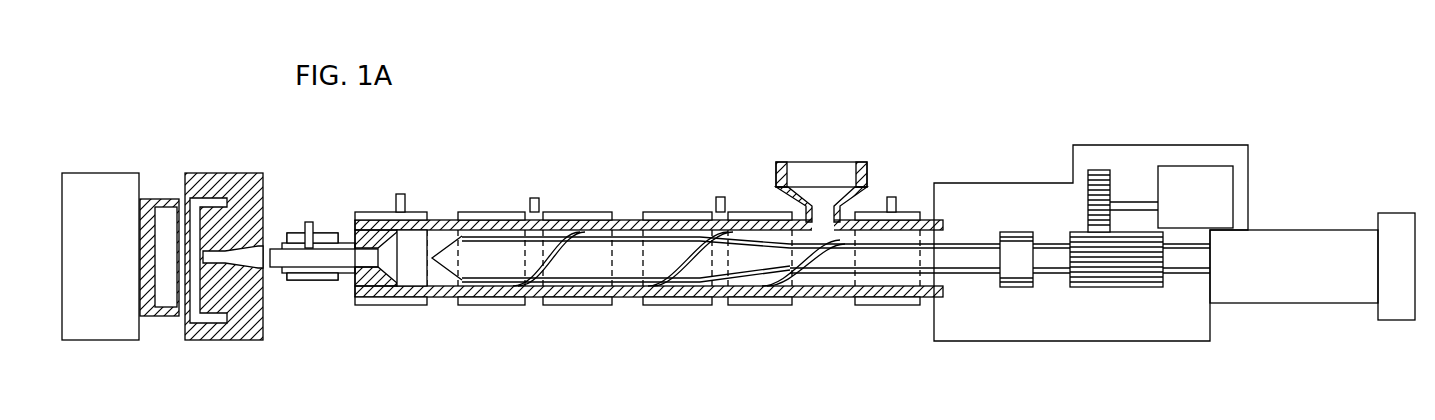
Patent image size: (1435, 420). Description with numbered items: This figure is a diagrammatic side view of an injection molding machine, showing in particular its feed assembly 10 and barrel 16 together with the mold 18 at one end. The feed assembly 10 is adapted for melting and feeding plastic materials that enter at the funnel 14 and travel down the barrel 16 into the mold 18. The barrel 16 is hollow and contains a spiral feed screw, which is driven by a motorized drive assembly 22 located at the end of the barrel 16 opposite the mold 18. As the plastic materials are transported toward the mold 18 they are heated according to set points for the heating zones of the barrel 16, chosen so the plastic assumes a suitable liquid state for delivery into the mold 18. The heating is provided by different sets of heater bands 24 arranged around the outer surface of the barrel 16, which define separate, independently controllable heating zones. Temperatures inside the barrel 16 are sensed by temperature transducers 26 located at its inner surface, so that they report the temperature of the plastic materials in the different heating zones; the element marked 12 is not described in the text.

The feed assembly 10 is at (583, 116).
The barrel 12 is at (914, 212).
The funnel 14 is at (778, 162).
The barrel 16 is at (626, 213).
The mold 18 is at (161, 170).
The motorized drive assembly 22 is at (1115, 145).
The heater bands 24 is at (363, 305).
The temperature transducers 26 is at (400, 194).